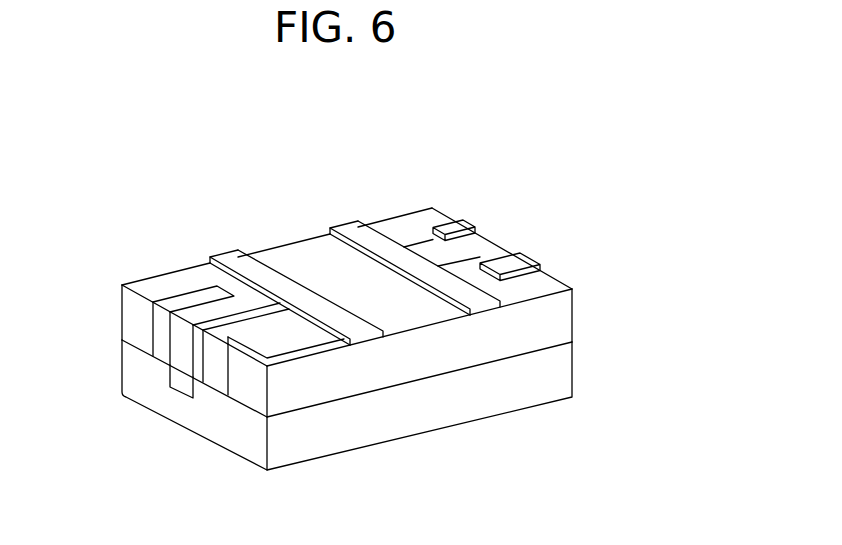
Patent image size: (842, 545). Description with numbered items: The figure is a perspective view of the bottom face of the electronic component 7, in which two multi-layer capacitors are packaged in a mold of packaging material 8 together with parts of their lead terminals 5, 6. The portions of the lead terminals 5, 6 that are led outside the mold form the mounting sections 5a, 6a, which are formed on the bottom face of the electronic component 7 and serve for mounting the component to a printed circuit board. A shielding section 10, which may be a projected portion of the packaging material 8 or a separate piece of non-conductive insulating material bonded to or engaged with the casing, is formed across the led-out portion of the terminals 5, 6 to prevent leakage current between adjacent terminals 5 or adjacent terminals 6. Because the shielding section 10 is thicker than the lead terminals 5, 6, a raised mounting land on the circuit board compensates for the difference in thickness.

The electronic component 7 is at (602, 175).
The packaging material 8 is at (556, 377).
The lead terminal 5 is at (347, 312).
The mounting section 5a is at (463, 230).
The lead terminal 6 is at (153, 330).
The mounting section 6a is at (183, 301).
The shielding section 10 is at (338, 229).